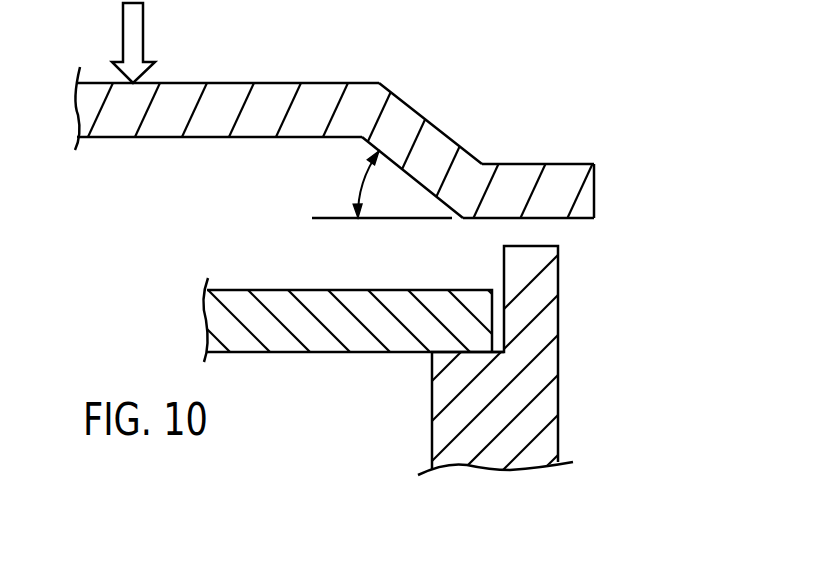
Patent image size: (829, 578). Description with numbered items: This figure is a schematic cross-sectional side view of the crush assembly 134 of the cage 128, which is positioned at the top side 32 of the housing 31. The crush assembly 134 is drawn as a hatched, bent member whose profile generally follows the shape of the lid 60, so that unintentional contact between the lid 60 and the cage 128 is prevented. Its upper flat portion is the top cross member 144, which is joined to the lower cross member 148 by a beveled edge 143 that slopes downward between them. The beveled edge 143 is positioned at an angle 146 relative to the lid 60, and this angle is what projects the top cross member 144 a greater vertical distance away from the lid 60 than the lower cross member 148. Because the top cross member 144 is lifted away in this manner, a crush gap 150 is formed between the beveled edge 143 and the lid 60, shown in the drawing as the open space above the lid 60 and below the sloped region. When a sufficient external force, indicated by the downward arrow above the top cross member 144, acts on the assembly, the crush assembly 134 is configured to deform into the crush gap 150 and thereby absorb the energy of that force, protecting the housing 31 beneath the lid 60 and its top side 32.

The crush assembly 134 is at (374, 123).
The top cross member 144 is at (316, 83).
The beveled edge 143 is at (440, 131).
The lower cross member 148 is at (538, 164).
The cage 128 is at (597, 187).
The angle 146 is at (363, 183).
The crush gap 150 is at (252, 180).
The lid 60 is at (270, 290).
The top side 32 is at (607, 300).
The housing 31 is at (528, 470).